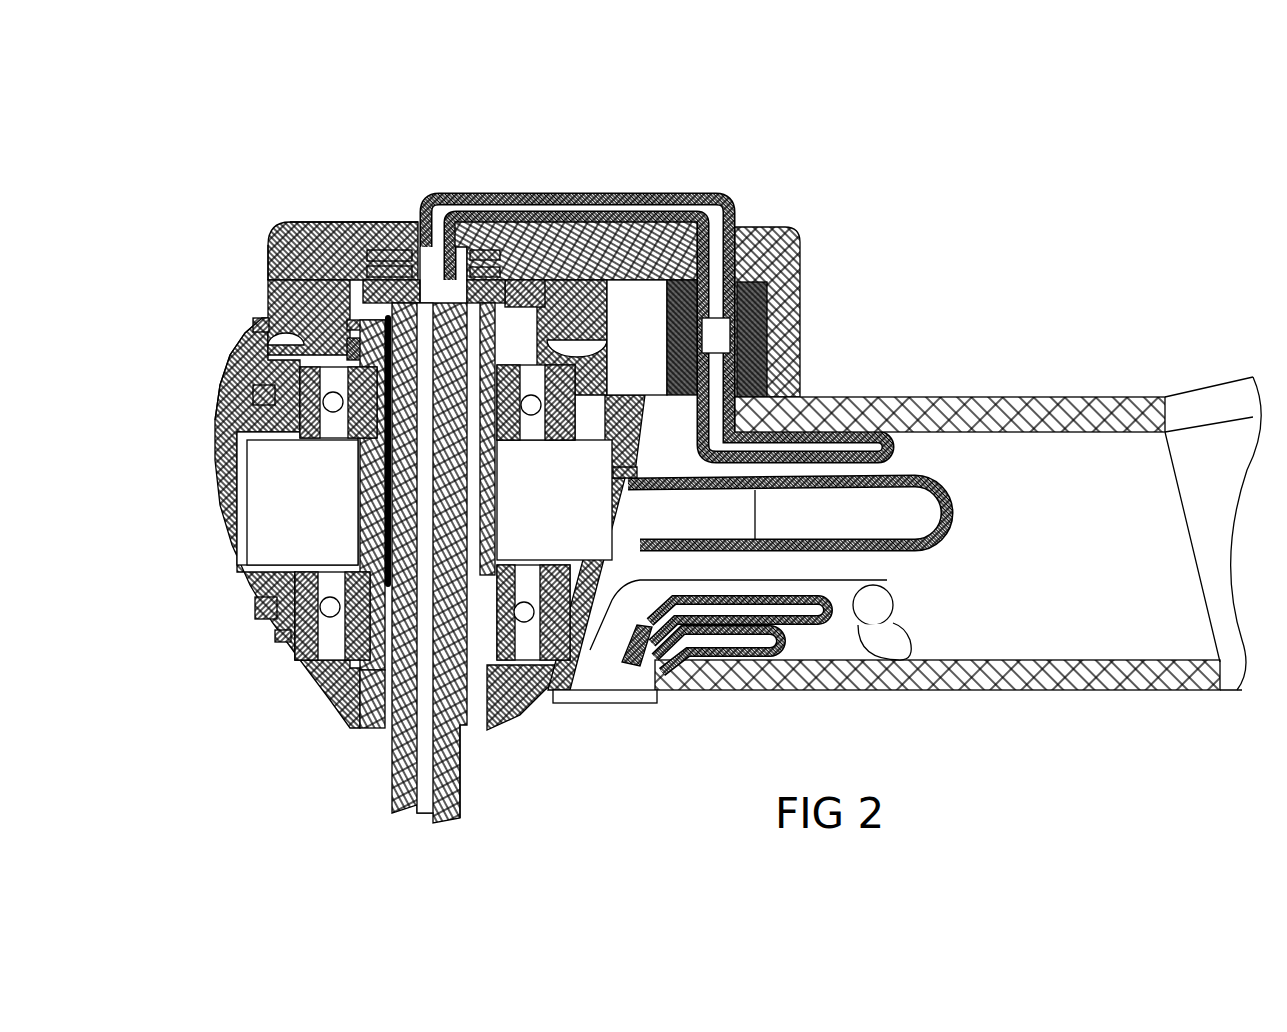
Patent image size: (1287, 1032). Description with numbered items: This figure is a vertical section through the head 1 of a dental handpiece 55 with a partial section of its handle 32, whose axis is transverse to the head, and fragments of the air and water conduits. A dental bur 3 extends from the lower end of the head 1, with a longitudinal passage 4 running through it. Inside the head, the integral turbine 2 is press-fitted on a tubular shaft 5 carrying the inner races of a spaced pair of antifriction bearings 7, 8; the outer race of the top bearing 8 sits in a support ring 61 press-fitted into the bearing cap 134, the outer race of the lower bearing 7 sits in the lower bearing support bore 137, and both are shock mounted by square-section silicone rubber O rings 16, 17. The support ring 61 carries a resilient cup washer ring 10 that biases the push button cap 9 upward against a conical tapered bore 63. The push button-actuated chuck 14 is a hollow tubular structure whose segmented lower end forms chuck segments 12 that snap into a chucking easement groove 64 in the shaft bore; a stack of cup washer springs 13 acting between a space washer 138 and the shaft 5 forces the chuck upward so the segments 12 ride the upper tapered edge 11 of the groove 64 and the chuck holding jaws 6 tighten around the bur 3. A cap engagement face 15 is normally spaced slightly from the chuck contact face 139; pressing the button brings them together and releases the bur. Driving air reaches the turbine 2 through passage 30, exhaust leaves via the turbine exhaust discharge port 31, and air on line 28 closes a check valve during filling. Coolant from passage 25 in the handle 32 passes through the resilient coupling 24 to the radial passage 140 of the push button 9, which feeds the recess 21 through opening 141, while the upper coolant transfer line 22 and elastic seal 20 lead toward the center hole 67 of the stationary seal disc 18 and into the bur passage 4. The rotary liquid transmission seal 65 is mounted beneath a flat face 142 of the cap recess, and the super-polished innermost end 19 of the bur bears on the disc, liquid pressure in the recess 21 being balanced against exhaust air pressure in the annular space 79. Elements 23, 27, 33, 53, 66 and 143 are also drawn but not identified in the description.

The head 1 is at (215, 453).
The turbine 2 is at (306, 505).
The dental bur 3 is at (465, 787).
The longitudinal passage 4 is at (427, 822).
The tubular shaft 5 is at (372, 735).
The chuck holding jaws 6 is at (255, 320).
The lower bearing 7 is at (318, 590).
The top bearing 8 is at (317, 425).
The push button cap 9 is at (272, 227).
The resilient cup washer ring 10 is at (266, 343).
The upper tapered edge 11 is at (385, 583).
The chuck segments 12 is at (397, 522).
The cup washer springs 13 is at (268, 272).
The push button-actuated chuck 14 is at (300, 262).
The cap engagement face 15 is at (330, 300).
The O ring 16 is at (253, 393).
The O ring 17 is at (255, 608).
The stationary seal disc 18 is at (545, 262).
The innermost end of bur 19 is at (515, 268).
The elastic seal 20 is at (443, 275).
The recess 21 is at (456, 248).
The upper coolant transfer line 22 is at (641, 197).
The flange block 23 is at (790, 227).
The resilient coupling 24 is at (667, 340).
The coolant passage 25 is at (890, 446).
The channel plate 27 is at (697, 596).
The air pressure line 28 is at (775, 641).
The driving air passage 30 is at (952, 512).
The turbine exhaust discharge port 31 is at (640, 472).
The handle 32 is at (1070, 396).
The bulb 33 is at (903, 643).
The plate 53 is at (636, 668).
The dental handpiece 55 is at (1003, 256).
The support ring 61 is at (268, 412).
The conical tapered bore 63 is at (253, 330).
The chucking easement groove 64 is at (373, 580).
The rotary liquid transmission seal 65 is at (470, 262).
The spring 66 is at (450, 245).
The center hole 67 is at (500, 250).
The annular space 79 is at (605, 262).
The bearing cap 134 is at (242, 338).
The lower bearing support bore 137 is at (288, 637).
The space washer 138 is at (355, 300).
The chuck contact face 139 is at (415, 258).
The radial passage 140 is at (693, 210).
The opening 141 is at (437, 250).
The flat face 142 is at (448, 258).
The movement 143 is at (845, 278).